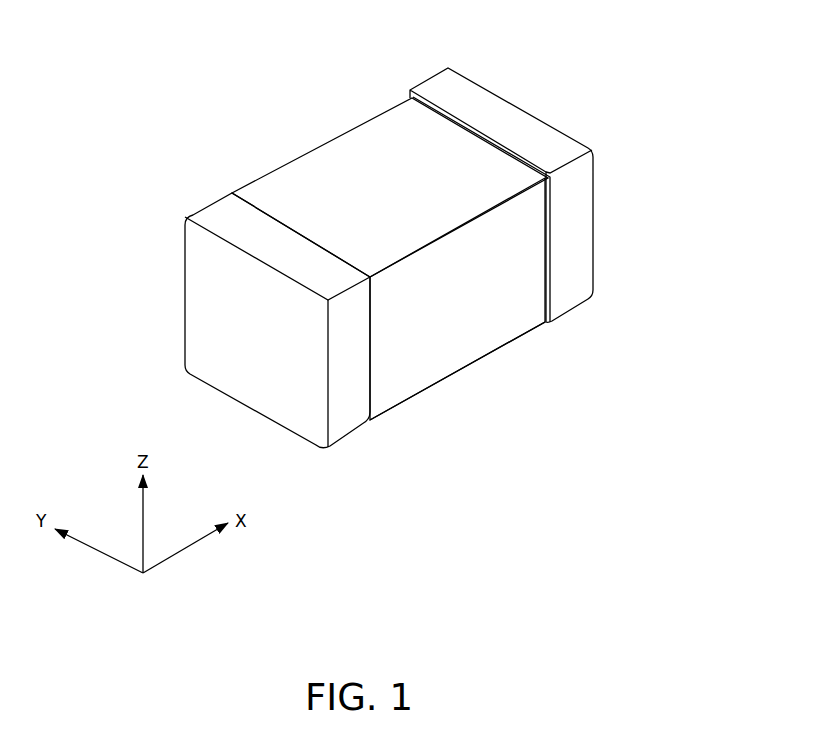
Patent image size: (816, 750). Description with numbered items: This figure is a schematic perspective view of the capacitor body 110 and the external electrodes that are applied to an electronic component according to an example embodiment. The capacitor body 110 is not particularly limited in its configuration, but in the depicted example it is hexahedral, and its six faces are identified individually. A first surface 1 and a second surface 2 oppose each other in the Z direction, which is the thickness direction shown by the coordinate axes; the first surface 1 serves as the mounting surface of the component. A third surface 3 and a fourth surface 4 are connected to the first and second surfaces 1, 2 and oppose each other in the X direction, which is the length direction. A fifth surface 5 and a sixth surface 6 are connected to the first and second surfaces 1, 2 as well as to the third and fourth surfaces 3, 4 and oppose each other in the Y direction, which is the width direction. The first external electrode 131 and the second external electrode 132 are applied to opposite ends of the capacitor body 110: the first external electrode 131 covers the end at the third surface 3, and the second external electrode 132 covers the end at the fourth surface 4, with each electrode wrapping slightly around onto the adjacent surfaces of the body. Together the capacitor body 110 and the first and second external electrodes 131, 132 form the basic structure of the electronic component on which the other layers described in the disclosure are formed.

The capacitor body 110 is at (463, 157).
The first external electrode 131 is at (193, 283).
The second external electrode 132 is at (586, 240).
The first surface 1 is at (392, 354).
The second surface 2 is at (400, 144).
The third surface 3 is at (205, 336).
The fourth surface 4 is at (575, 208).
The fifth surface 5 is at (344, 176).
The sixth surface 6 is at (448, 323).